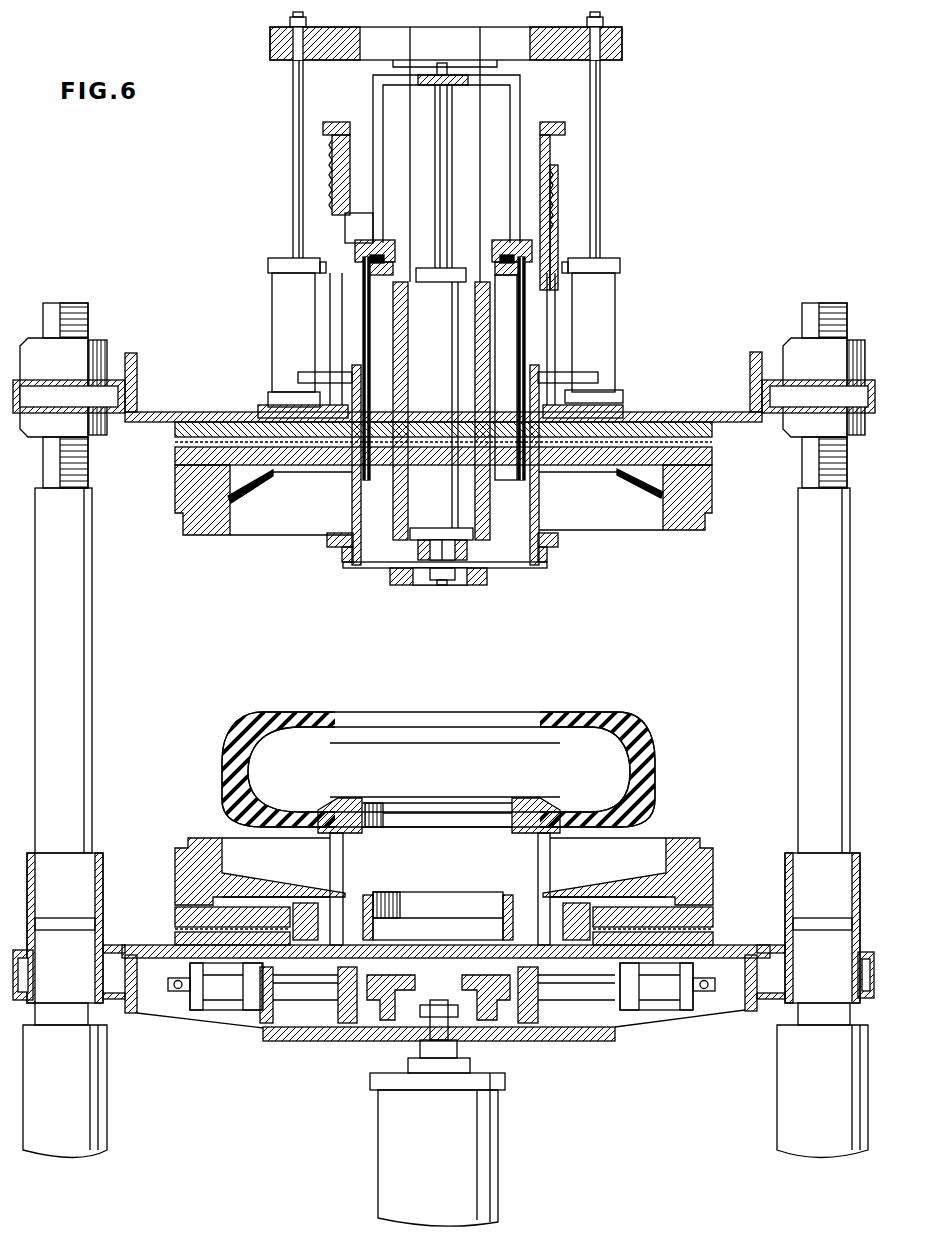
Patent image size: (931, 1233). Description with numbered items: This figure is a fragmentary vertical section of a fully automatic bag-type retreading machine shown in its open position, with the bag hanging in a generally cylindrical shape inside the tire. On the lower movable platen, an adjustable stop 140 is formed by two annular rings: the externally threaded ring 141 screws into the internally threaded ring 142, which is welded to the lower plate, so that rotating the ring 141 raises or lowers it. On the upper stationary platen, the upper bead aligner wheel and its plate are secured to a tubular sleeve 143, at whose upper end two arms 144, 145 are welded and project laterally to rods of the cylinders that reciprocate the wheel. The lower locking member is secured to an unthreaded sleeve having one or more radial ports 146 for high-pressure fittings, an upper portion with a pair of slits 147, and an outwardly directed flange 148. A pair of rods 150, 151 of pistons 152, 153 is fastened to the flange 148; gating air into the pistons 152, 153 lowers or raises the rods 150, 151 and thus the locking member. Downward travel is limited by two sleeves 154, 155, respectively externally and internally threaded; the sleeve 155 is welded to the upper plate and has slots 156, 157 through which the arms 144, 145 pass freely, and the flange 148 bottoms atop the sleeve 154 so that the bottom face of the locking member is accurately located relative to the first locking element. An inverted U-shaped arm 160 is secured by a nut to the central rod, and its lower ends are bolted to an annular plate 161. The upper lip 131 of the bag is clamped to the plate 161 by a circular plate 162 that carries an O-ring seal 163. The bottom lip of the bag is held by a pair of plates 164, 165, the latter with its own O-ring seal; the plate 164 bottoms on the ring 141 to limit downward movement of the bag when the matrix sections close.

The lip 131 is at (540, 240).
The adjustable stop 140 is at (488, 884).
The ring 141 is at (400, 892).
The ring 142 is at (415, 935).
The tubular sleeve 143 is at (515, 568).
The arm 144 is at (305, 375).
The arm 145 is at (595, 378).
The radial port 146 is at (408, 425).
The slit 147 is at (395, 155).
The flange 148 is at (620, 46).
The rod 150 is at (293, 176).
The rod 151 is at (600, 104).
The piston 152 is at (280, 310).
The piston 153 is at (598, 285).
The sleeve 154 is at (522, 120).
The sleeve 155 is at (558, 180).
The slot 156 is at (333, 290).
The slot 157 is at (555, 292).
The inverted generally U-shaped arm 160 is at (373, 104).
The annular plate 161 is at (360, 240).
The circular plate 162 is at (518, 377).
The O-ring seal 163 is at (441, 404).
The plate 164 is at (360, 478).
The plate 165 is at (370, 528).